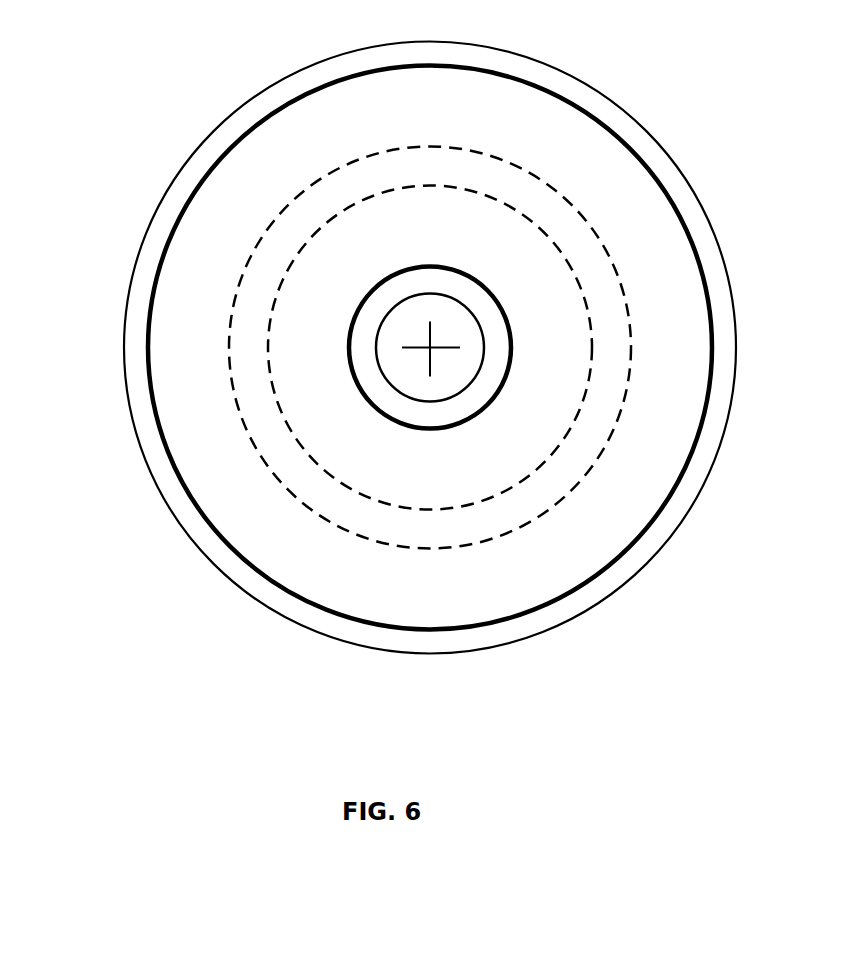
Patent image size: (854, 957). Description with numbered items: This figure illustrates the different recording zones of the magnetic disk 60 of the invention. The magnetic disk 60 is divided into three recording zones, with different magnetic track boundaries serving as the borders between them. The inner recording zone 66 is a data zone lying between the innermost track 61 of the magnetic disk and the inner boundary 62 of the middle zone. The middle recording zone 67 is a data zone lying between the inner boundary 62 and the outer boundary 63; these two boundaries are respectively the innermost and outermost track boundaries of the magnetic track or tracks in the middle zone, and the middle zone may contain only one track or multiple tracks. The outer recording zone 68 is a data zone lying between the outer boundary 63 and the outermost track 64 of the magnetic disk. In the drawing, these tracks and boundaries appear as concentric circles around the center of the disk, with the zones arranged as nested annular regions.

The magnetic disk 60 is at (243, 607).
The innermost track 61 is at (424, 444).
The inner boundary 62 is at (542, 446).
The outer boundary 63 is at (479, 554).
The outermost track 64 is at (619, 573).
The inner recording zone 66 is at (320, 259).
The middle recording zone 67 is at (238, 318).
The outer recording zone 68 is at (167, 393).